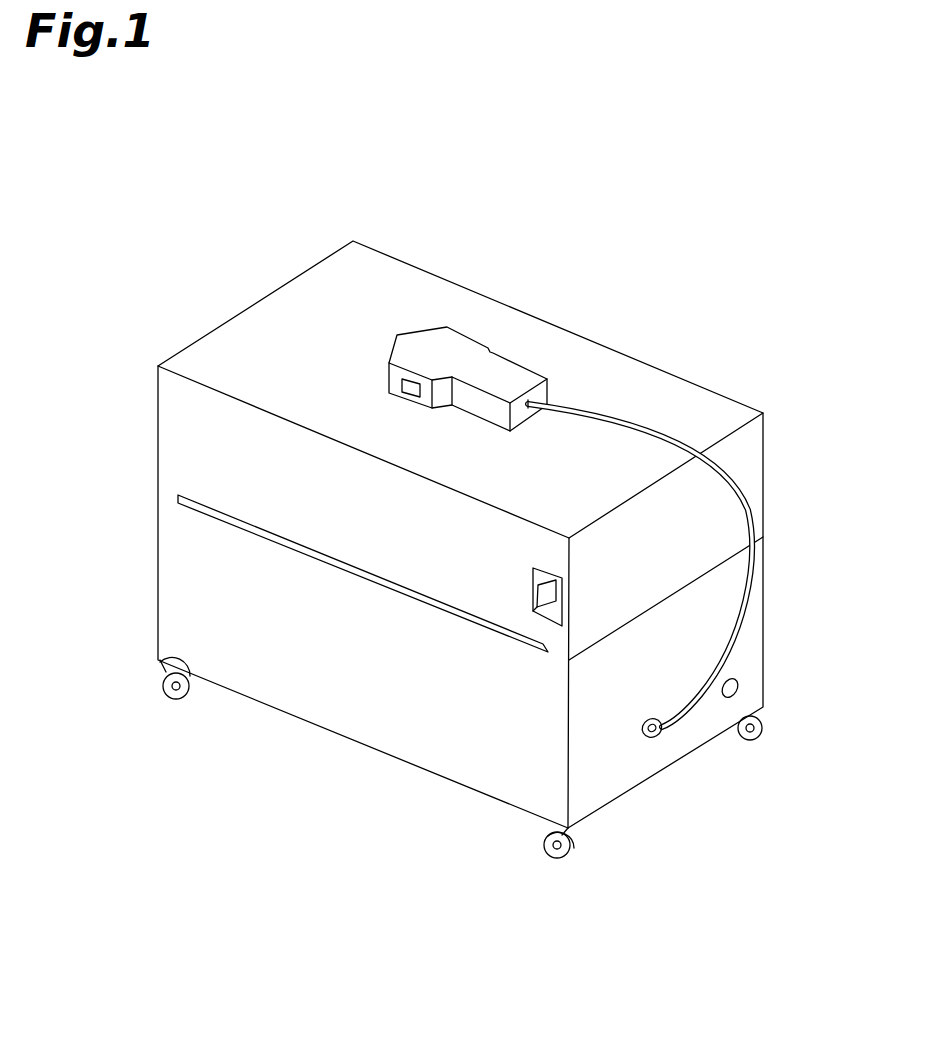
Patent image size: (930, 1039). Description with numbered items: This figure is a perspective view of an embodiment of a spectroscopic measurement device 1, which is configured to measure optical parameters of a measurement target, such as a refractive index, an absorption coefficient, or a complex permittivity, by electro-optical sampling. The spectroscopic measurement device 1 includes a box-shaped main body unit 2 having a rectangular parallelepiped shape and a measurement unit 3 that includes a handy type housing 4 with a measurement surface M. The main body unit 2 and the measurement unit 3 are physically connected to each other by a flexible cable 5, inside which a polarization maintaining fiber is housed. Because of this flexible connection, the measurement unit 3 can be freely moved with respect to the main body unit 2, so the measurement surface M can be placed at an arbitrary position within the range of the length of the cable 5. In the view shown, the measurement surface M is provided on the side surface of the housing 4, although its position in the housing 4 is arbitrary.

The spectroscopic measurement device 1 is at (246, 253).
The main body unit 2 is at (131, 433).
The measurement unit 3 is at (522, 353).
The housing 4 is at (447, 348).
The measurement surface M is at (405, 388).
The cable 5 is at (740, 478).